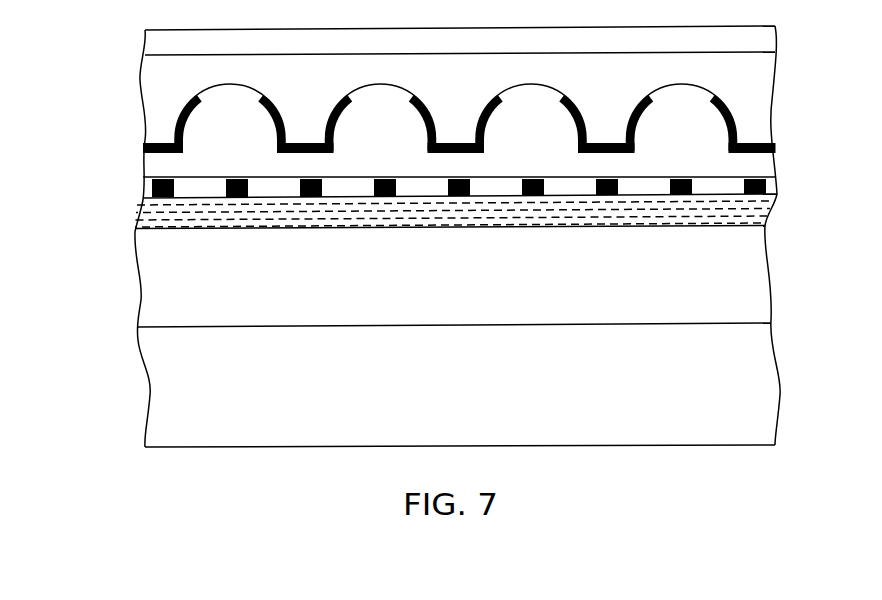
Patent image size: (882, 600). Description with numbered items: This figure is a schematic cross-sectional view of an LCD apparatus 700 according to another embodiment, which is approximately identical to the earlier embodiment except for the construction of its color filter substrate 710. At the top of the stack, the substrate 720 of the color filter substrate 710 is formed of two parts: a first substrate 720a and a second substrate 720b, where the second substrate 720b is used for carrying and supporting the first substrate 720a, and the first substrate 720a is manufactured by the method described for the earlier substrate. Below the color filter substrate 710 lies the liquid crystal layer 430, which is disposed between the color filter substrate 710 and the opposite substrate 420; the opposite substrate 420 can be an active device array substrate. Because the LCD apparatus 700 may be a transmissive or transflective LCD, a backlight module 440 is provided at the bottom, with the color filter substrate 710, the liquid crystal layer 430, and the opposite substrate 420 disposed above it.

The LCD apparatus 700 is at (830, 467).
The color filter substrate 710 is at (439, 112).
The substrate 720 is at (410, 58).
The first substrate 720a is at (157, 90).
The second substrate 720b is at (157, 42).
The liquid crystal layer 430 is at (768, 200).
The opposite substrate 420 is at (751, 276).
The backlight module 440 is at (763, 384).